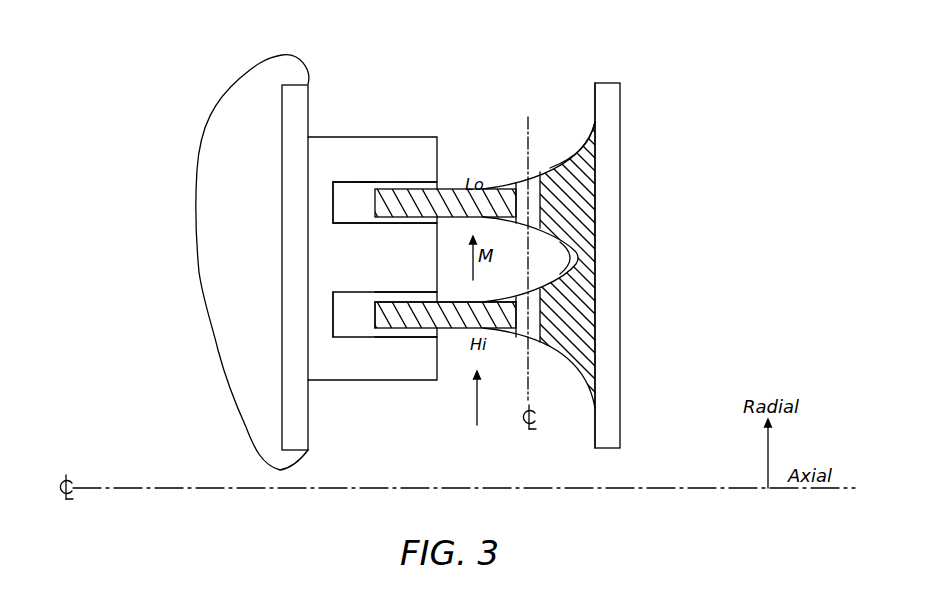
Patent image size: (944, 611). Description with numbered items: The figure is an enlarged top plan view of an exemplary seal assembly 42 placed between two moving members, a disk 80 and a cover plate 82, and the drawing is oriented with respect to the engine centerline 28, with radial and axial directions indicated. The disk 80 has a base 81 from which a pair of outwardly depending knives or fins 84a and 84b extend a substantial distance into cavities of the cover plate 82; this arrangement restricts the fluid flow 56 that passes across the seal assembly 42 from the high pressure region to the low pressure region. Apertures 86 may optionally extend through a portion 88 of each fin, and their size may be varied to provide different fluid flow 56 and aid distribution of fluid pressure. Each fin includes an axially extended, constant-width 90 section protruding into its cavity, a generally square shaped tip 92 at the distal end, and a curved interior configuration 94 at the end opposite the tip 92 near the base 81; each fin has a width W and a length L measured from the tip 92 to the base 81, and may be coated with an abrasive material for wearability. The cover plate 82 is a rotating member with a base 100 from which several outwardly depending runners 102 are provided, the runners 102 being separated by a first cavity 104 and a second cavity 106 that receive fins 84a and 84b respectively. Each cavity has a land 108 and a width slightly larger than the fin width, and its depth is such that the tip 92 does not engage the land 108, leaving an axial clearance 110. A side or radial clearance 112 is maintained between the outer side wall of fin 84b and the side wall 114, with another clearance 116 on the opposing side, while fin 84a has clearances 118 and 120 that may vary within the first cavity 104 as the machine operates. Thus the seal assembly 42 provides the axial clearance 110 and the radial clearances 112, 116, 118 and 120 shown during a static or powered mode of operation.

The engine central longitudinal axis 28 is at (838, 490).
The seal assembly 42 is at (697, 112).
The fluid flow 56 is at (476, 407).
The disk 80 is at (620, 300).
The base 81 is at (608, 103).
The cover plate 82 is at (293, 183).
The fin 84a is at (452, 330).
The fin 84b is at (408, 188).
The apertures 86 is at (535, 188).
The portion of fin 88 is at (573, 150).
The constant-width 90 is at (427, 302).
The tip 92 is at (375, 317).
The curved interior configuration 94 is at (560, 272).
The base 100 is at (297, 437).
The runners 102 is at (353, 152).
The first cavity 104 is at (333, 313).
The second cavity 106 is at (340, 192).
The land 108 is at (348, 203).
The axial clearance 110 is at (353, 197).
The radial clearance 112 is at (428, 182).
The side wall 114 is at (370, 182).
The clearance 116 is at (387, 218).
The clearance 118 is at (393, 297).
The clearance 120 is at (393, 332).